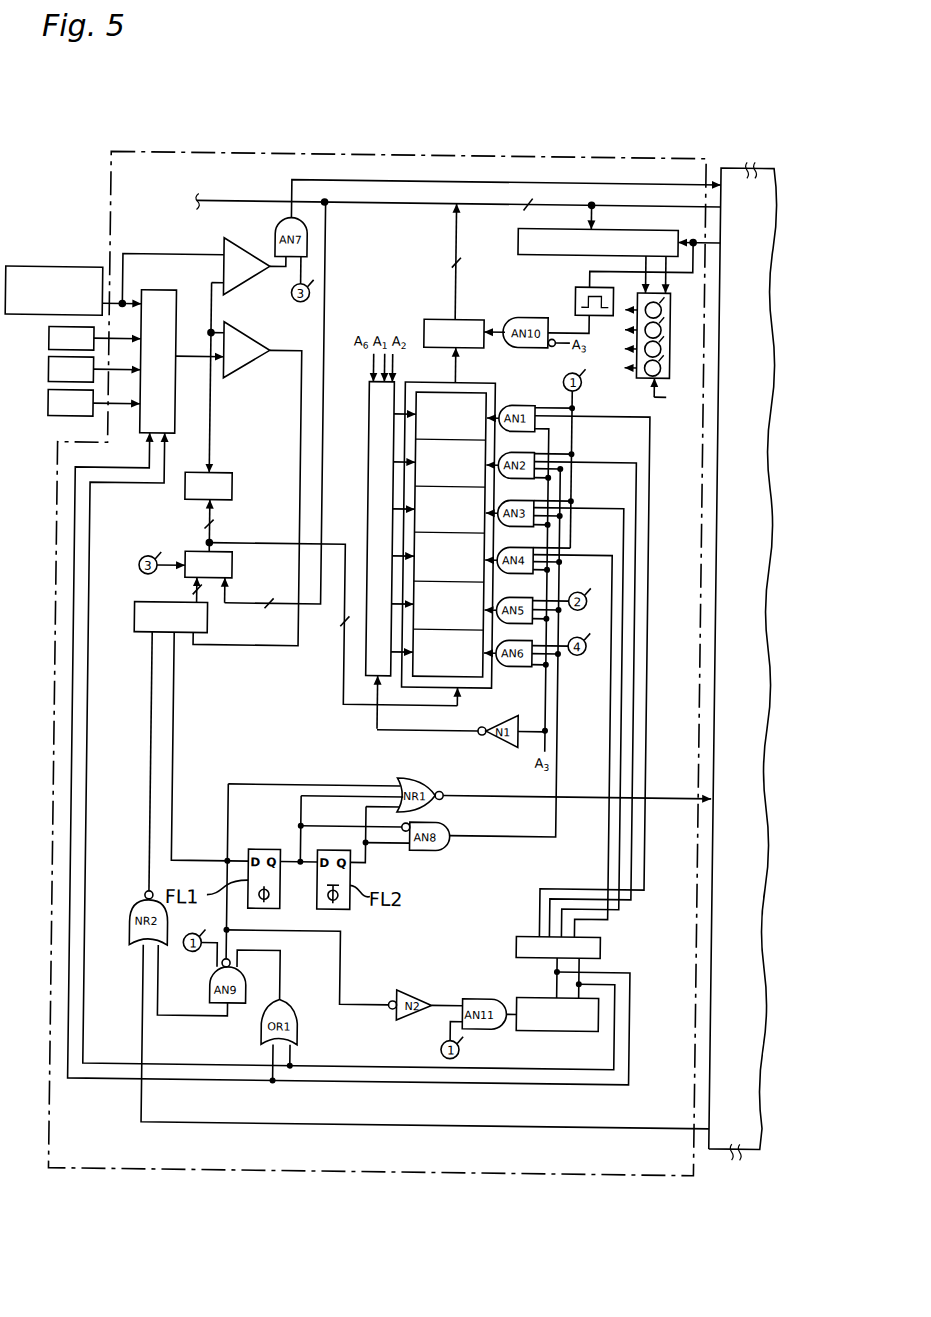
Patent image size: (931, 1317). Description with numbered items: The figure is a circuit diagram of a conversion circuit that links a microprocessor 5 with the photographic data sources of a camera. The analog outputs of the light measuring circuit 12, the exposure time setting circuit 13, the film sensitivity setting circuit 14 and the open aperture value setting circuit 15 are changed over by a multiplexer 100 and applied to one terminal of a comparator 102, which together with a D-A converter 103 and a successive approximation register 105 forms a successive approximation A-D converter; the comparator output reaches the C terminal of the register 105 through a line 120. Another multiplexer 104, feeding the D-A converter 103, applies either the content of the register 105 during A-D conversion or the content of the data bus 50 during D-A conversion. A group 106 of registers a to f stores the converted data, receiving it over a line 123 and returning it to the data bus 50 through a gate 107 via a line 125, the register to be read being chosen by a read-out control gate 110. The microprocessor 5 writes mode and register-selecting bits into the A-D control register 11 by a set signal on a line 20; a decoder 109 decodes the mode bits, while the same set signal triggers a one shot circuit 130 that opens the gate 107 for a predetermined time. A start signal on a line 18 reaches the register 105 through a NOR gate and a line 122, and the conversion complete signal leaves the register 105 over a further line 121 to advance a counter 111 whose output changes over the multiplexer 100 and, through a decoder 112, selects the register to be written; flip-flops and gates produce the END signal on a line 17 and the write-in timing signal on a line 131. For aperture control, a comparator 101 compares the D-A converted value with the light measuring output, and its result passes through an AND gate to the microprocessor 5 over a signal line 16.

The microprocessor 5 is at (735, 164).
The A-D control register 11 is at (513, 240).
The light measuring circuit 12 is at (46, 271).
The exposure time setting circuit 13 is at (45, 341).
The film sensitivity setting circuit 14 is at (45, 373).
The open aperture value setting circuit 15 is at (45, 405).
The signal line 16 is at (511, 182).
The line 17 is at (482, 795).
The line 18 is at (514, 1125).
The line 20 is at (690, 242).
The data bus 50 is at (384, 204).
The multiplexer 100 is at (160, 270).
The comparator 101 is at (240, 290).
The comparator 102 is at (241, 373).
The D-A converter 103 is at (230, 488).
The multiplexer 104 is at (261, 570).
The successive approximation register 105 is at (134, 625).
The group of registers 106 is at (480, 383).
The gate 107 is at (428, 319).
The decoder 109 is at (666, 327).
The read-out control gate 110 is at (366, 463).
The counter 111 is at (603, 1013).
The decoder 112 is at (604, 947).
The line 120 is at (230, 647).
The signal line 121 is at (174, 759).
The line 122 is at (152, 705).
The line 123 is at (344, 692).
The line 125 is at (451, 363).
The one shot circuit 130 is at (571, 300).
The line 131 is at (558, 815).